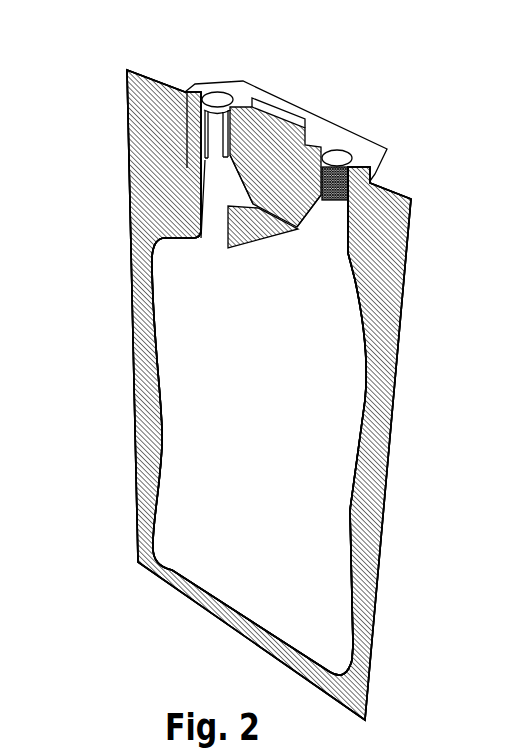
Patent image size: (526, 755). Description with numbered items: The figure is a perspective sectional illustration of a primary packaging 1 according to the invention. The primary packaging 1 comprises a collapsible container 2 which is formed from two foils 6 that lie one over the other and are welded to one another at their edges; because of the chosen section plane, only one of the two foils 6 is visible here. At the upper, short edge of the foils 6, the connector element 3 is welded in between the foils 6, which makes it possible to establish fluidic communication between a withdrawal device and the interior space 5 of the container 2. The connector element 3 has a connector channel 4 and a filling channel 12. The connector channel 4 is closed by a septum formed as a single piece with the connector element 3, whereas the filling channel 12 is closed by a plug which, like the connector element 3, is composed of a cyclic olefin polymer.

The primary packaging 1 is at (400, 640).
The collapsible container 2 is at (392, 541).
The connector element 3 is at (318, 100).
The connector channel 4 is at (323, 218).
The interior space 5 is at (245, 352).
The foil 6 is at (375, 447).
The filling channel 12 is at (225, 185).